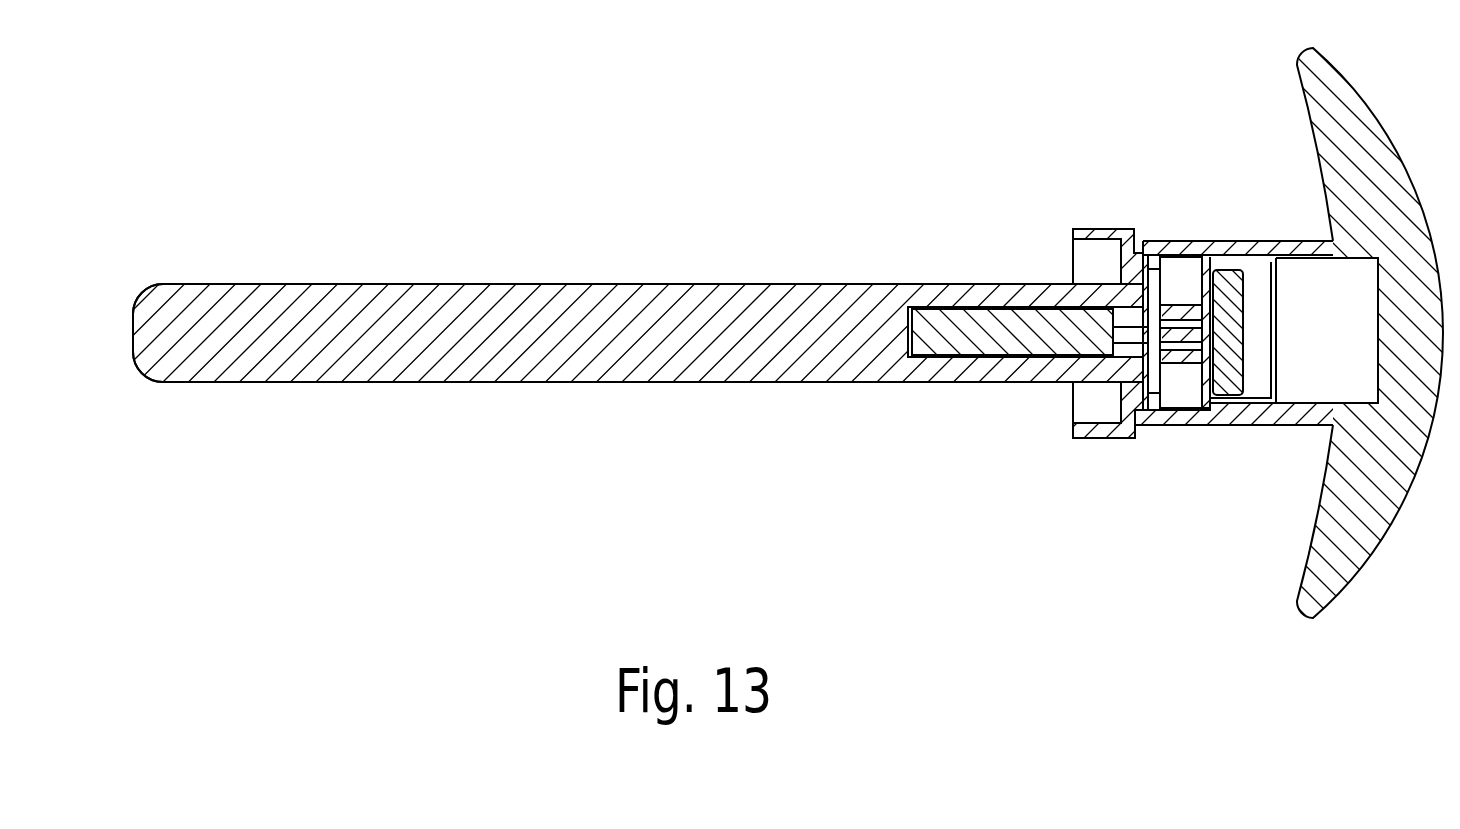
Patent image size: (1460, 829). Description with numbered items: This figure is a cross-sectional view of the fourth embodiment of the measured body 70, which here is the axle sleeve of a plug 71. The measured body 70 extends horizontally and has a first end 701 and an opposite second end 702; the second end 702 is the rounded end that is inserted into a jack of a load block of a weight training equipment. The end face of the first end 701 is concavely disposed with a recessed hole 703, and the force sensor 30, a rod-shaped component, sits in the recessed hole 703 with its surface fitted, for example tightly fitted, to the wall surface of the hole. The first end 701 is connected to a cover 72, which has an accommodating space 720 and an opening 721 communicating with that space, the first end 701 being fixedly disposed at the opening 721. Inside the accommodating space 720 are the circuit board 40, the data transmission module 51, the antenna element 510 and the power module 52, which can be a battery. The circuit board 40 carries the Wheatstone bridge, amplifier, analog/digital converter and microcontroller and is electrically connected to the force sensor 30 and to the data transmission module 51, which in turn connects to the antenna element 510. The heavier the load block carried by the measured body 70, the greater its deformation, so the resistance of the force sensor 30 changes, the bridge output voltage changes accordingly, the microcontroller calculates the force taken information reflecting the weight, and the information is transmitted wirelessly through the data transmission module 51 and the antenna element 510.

The force sensor 30 is at (993, 342).
The circuit board 40 is at (1152, 380).
The data transmission module 51 is at (1185, 353).
The power module 52 is at (1228, 372).
The measured body 70 is at (585, 305).
The plug 71 is at (953, 145).
The cover 72 is at (1248, 412).
The antenna element 510 is at (1273, 380).
The first end 701 is at (978, 295).
The second end 702 is at (165, 316).
The recessed hole 703 is at (1132, 318).
The accommodating space 720 is at (1255, 278).
The opening 721 is at (1085, 261).